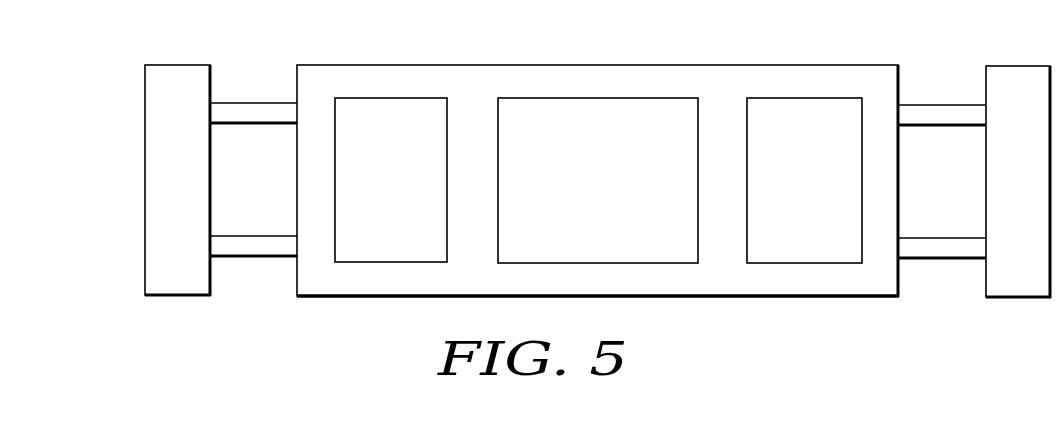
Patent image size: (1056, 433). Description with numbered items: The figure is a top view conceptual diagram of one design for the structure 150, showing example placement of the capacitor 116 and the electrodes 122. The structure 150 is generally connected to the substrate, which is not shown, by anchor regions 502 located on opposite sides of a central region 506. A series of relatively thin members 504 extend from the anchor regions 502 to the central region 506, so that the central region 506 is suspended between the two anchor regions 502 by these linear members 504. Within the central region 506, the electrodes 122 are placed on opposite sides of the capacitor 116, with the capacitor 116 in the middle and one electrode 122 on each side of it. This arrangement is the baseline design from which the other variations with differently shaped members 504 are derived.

The structure 150 is at (927, 34).
The central region 506 is at (478, 77).
The anchor regions 502 is at (194, 192).
The thin members 504 is at (250, 112).
The electrodes 122 is at (368, 192).
The capacitor 116 is at (581, 194).